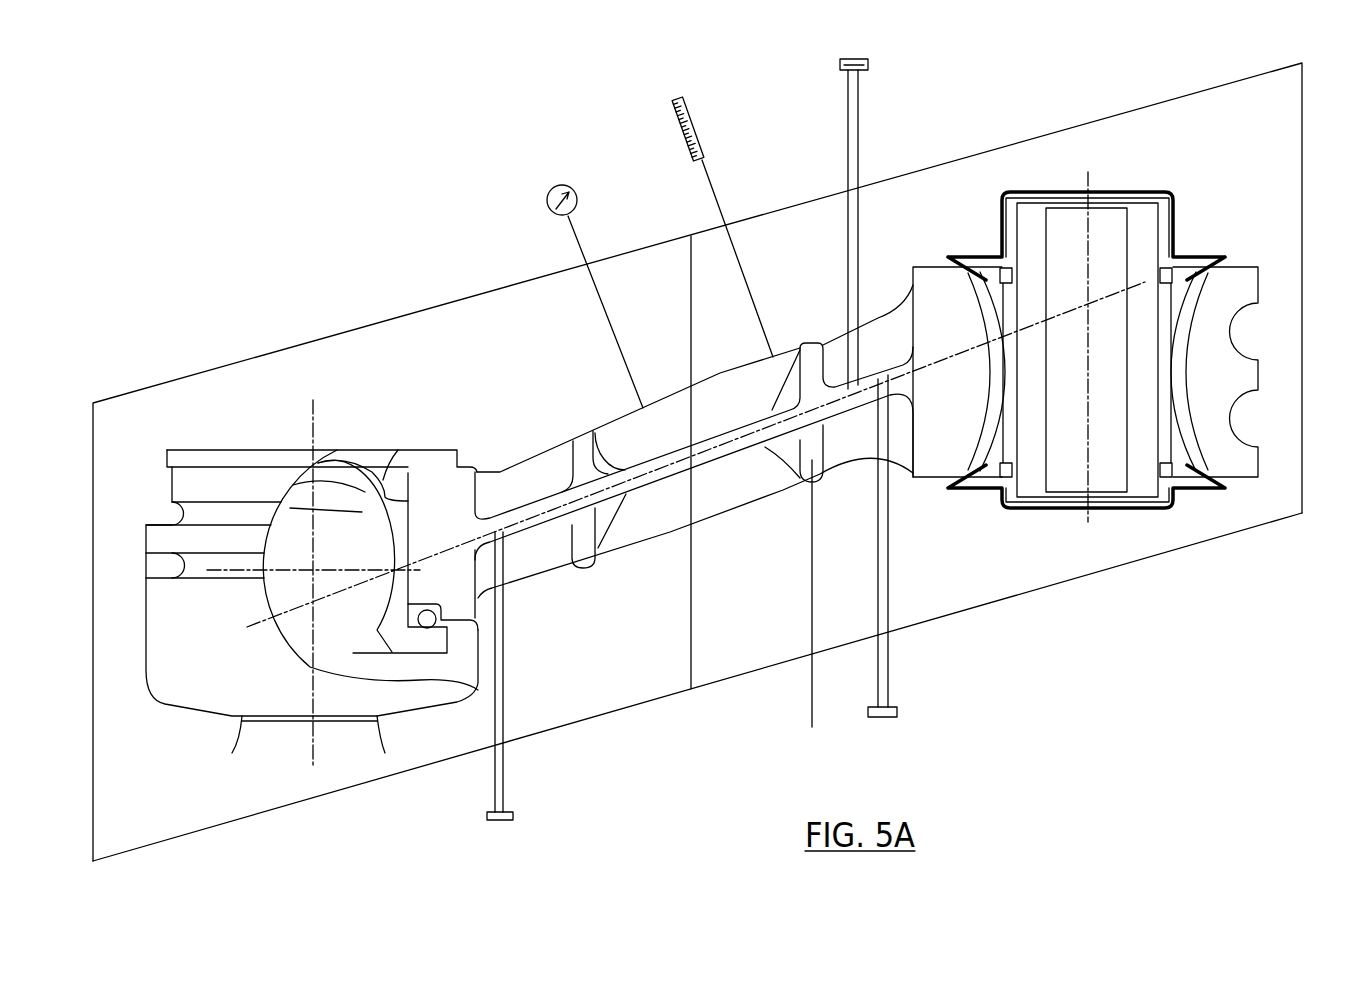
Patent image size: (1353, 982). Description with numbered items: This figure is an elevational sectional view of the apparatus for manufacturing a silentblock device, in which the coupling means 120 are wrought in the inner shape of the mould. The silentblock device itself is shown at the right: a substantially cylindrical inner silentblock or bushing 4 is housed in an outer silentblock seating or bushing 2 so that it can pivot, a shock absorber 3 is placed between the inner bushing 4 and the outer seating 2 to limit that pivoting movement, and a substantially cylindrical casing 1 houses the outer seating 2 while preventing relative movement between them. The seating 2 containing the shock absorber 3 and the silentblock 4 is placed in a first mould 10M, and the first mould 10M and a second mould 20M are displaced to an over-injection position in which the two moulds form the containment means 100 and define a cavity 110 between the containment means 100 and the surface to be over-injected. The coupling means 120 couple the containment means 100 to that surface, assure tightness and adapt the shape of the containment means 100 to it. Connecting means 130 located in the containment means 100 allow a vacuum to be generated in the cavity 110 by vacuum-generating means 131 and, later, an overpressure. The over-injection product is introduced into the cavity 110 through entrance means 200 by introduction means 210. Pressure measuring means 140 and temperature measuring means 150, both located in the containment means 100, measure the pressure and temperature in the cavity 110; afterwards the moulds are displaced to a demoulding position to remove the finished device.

The casing 1 is at (1250, 373).
The outer silentblock seating or bushing 2 is at (1187, 397).
The shock absorber 3 is at (1172, 452).
The inner silentblock or bushing 4 is at (1143, 223).
The first mould 10M is at (560, 682).
The second mould 20M is at (508, 355).
The containment means 100 is at (657, 700).
The cavity 110 is at (819, 612).
The coupling means 120 is at (1058, 195).
The connecting means 130 is at (853, 135).
The vacuum-generating means 131 is at (857, 63).
The pressure measuring means 140 is at (547, 200).
The temperature measuring means 150 is at (693, 148).
The entrance means 200 is at (490, 800).
The introduction means 210 is at (512, 822).